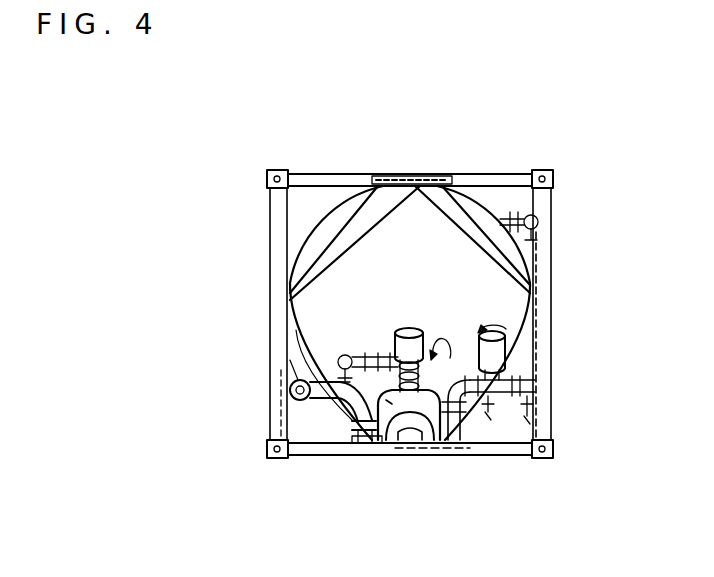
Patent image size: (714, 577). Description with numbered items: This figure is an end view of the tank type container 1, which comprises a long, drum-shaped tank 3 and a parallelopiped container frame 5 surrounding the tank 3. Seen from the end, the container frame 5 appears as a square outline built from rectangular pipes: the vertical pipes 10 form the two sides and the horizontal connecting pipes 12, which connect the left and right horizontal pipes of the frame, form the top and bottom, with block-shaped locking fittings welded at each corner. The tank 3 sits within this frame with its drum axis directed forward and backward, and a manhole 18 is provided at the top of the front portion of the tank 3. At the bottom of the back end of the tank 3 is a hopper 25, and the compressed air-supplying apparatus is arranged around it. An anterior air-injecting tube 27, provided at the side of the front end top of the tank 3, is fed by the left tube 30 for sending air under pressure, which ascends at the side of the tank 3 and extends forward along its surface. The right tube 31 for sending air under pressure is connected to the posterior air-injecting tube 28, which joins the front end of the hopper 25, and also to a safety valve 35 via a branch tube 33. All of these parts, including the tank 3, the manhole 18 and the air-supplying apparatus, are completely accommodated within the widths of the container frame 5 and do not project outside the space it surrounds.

The tank type container 1 is at (343, 157).
The tank 3 is at (318, 237).
The container frame 5 is at (553, 201).
The vertical pipes 10 is at (545, 290).
The horizontal connecting pipes 12 is at (492, 176).
The manhole 18 is at (412, 180).
The hopper 25 is at (368, 443).
The anterior air-injecting tube 27 is at (500, 212).
The posterior air-injecting tube 28 is at (405, 443).
The left tube for sending air under pressure 30 is at (535, 262).
The right tube for sending air under pressure 31 is at (475, 440).
The branch tube 33 is at (355, 440).
The safety valve 35 is at (295, 368).